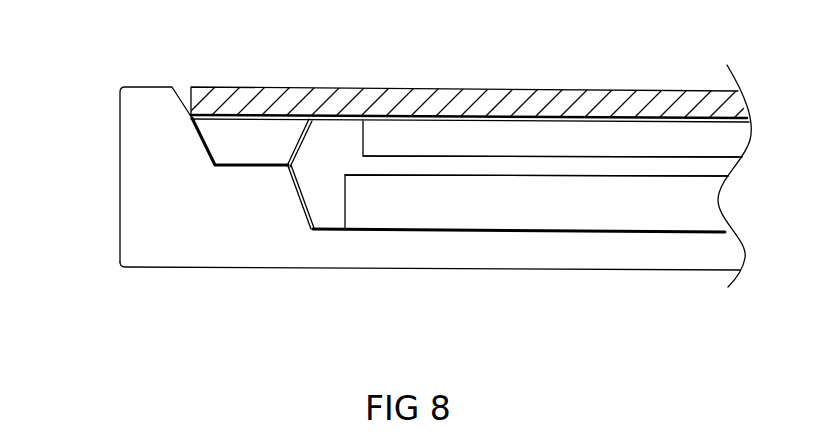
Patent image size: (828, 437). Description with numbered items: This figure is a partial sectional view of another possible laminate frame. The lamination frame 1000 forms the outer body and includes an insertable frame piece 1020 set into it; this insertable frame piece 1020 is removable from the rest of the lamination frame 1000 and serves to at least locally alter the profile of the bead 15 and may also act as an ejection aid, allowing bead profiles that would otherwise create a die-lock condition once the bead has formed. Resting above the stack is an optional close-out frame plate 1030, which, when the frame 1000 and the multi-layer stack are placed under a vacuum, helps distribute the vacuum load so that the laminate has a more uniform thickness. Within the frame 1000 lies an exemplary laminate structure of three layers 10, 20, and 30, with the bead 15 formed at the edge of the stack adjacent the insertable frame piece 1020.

The lamination frame 1000 is at (203, 230).
The insertable frame piece 1020 is at (243, 138).
The close-out frame plate 1030 is at (305, 125).
The layer 10 is at (538, 138).
The bead 15 is at (327, 200).
The layer 20 is at (440, 170).
The layer 30 is at (440, 213).